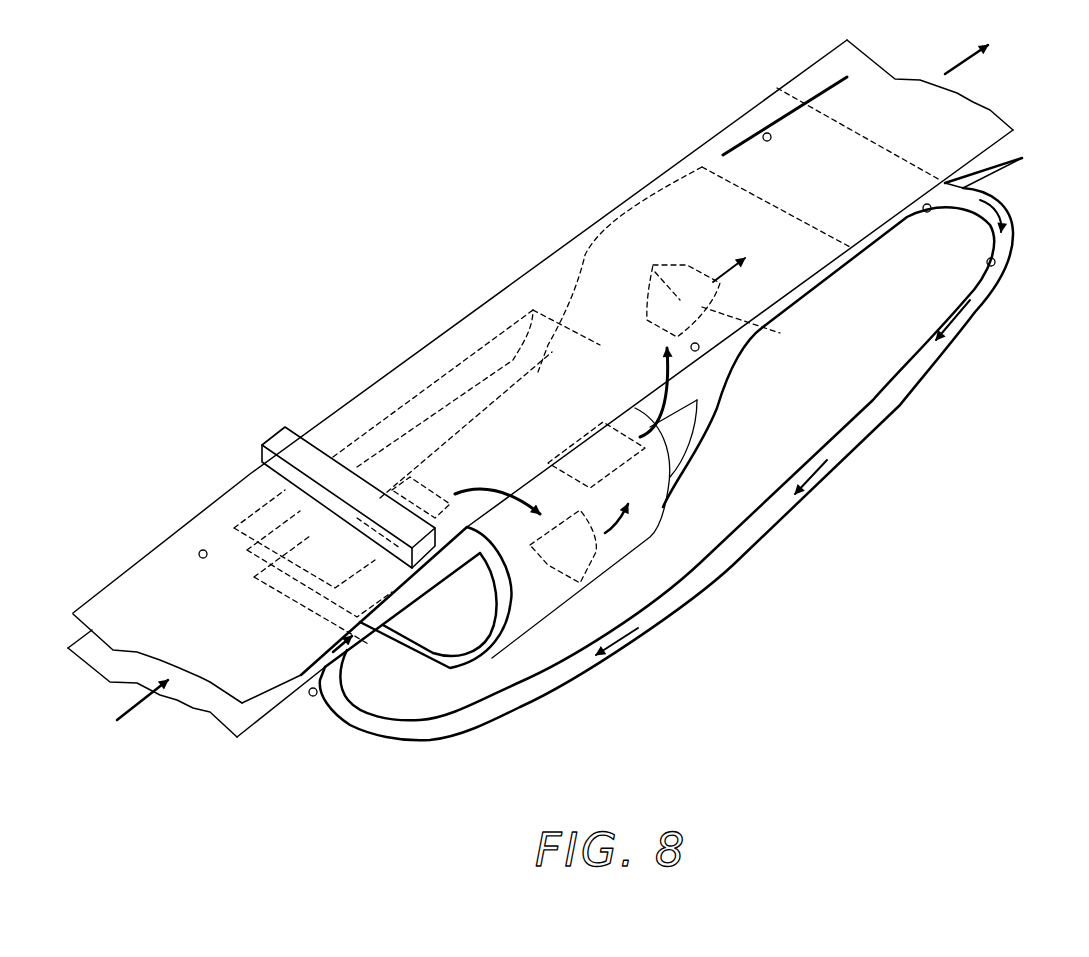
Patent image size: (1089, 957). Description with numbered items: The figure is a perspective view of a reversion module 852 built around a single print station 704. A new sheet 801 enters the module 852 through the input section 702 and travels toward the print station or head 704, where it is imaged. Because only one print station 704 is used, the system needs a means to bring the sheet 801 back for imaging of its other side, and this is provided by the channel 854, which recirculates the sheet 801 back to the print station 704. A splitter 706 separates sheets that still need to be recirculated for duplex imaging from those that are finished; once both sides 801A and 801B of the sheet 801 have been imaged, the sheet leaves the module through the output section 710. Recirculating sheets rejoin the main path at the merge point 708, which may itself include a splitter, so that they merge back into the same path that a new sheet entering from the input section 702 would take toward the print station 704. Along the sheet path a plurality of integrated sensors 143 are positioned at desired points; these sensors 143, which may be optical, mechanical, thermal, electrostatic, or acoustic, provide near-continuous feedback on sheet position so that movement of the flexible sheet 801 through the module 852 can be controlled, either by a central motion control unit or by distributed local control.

The integrated sensors 143 is at (203, 549).
The input section 702 is at (157, 692).
The print station 704 is at (285, 427).
The splitter 706 is at (820, 92).
The merge point 708 is at (333, 650).
The output section 710 is at (973, 57).
The sheet 801 is at (400, 487).
The first side of the sheet 801A is at (440, 498).
The second side of the sheet 801B is at (680, 300).
The reversion module 852 is at (527, 240).
The channel 854 is at (924, 367).